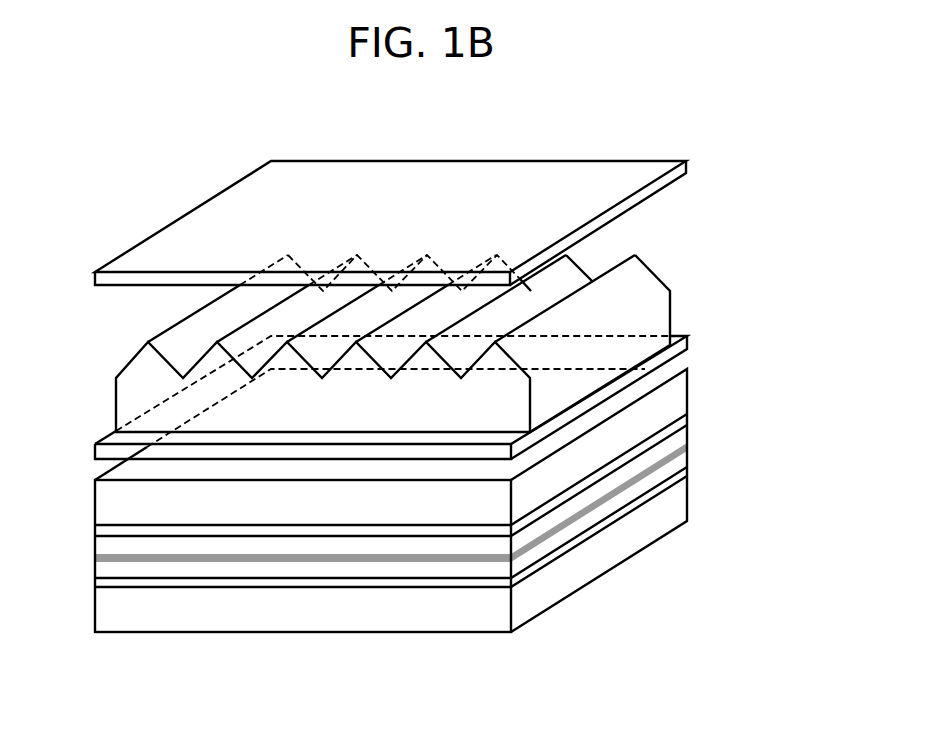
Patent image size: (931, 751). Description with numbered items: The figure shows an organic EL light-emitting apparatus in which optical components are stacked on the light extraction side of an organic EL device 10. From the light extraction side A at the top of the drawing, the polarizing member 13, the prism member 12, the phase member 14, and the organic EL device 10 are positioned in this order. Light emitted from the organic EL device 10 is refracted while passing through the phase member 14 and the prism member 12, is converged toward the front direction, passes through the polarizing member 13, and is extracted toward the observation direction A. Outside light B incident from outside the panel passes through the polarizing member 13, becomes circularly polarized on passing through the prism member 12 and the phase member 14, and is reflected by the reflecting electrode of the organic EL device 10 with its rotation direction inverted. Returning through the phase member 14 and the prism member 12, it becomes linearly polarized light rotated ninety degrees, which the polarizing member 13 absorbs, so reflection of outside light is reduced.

The organic EL device 10 is at (737, 368).
The prism member 12 is at (671, 322).
The polarizing member 13 is at (688, 170).
The phase member 14 is at (689, 345).
The light extraction side A is at (536, 220).
The outside light B is at (280, 306).